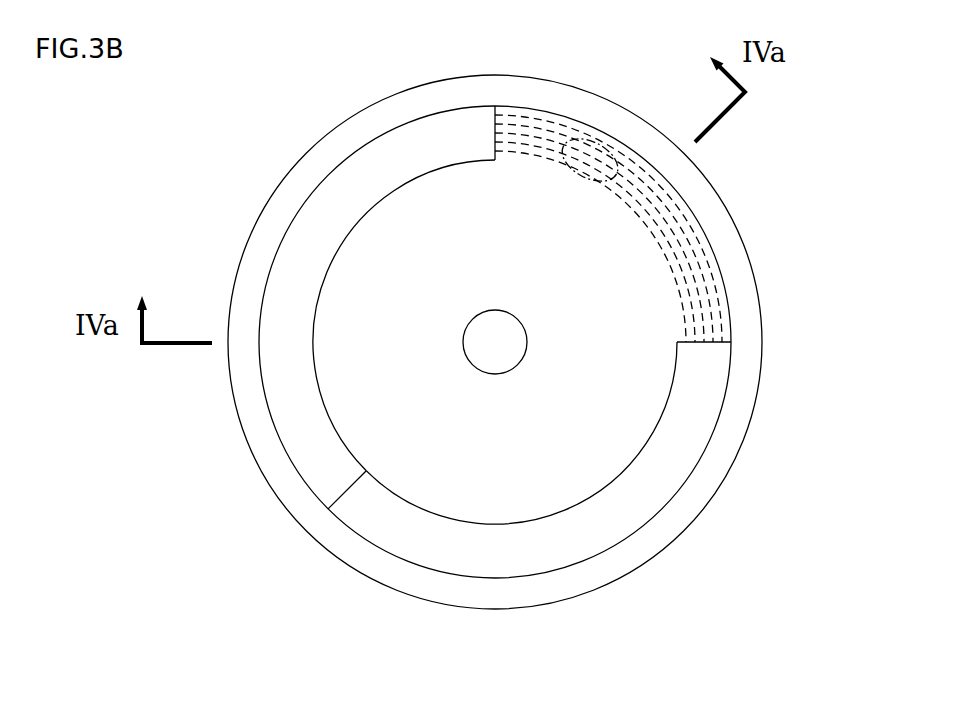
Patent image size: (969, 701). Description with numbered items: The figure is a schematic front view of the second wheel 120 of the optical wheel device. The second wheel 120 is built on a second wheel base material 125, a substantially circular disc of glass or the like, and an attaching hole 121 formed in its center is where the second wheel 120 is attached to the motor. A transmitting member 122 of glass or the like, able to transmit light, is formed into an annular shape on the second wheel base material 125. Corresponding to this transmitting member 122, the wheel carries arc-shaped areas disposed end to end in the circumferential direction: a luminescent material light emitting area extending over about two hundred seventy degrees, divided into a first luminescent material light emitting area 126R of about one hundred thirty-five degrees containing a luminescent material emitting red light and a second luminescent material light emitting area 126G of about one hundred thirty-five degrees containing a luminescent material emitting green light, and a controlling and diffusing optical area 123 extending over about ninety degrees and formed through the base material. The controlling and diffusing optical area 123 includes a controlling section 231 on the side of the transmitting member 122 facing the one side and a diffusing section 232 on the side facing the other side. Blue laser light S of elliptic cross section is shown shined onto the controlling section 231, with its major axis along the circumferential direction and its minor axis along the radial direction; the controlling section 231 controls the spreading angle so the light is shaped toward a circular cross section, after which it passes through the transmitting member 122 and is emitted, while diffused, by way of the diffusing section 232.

The second wheel 120 is at (800, 128).
The attaching hole 121 is at (485, 375).
The transmitting member 122 is at (535, 108).
The controlling and diffusing optical area 123 is at (630, 147).
The second wheel base material 125 is at (725, 243).
The second luminescent material light emitting area 126G is at (298, 270).
The first luminescent material light emitting area 126R is at (618, 512).
The controlling section 231 is at (710, 303).
The diffusing section 232 is at (662, 222).
The laser light S is at (598, 147).